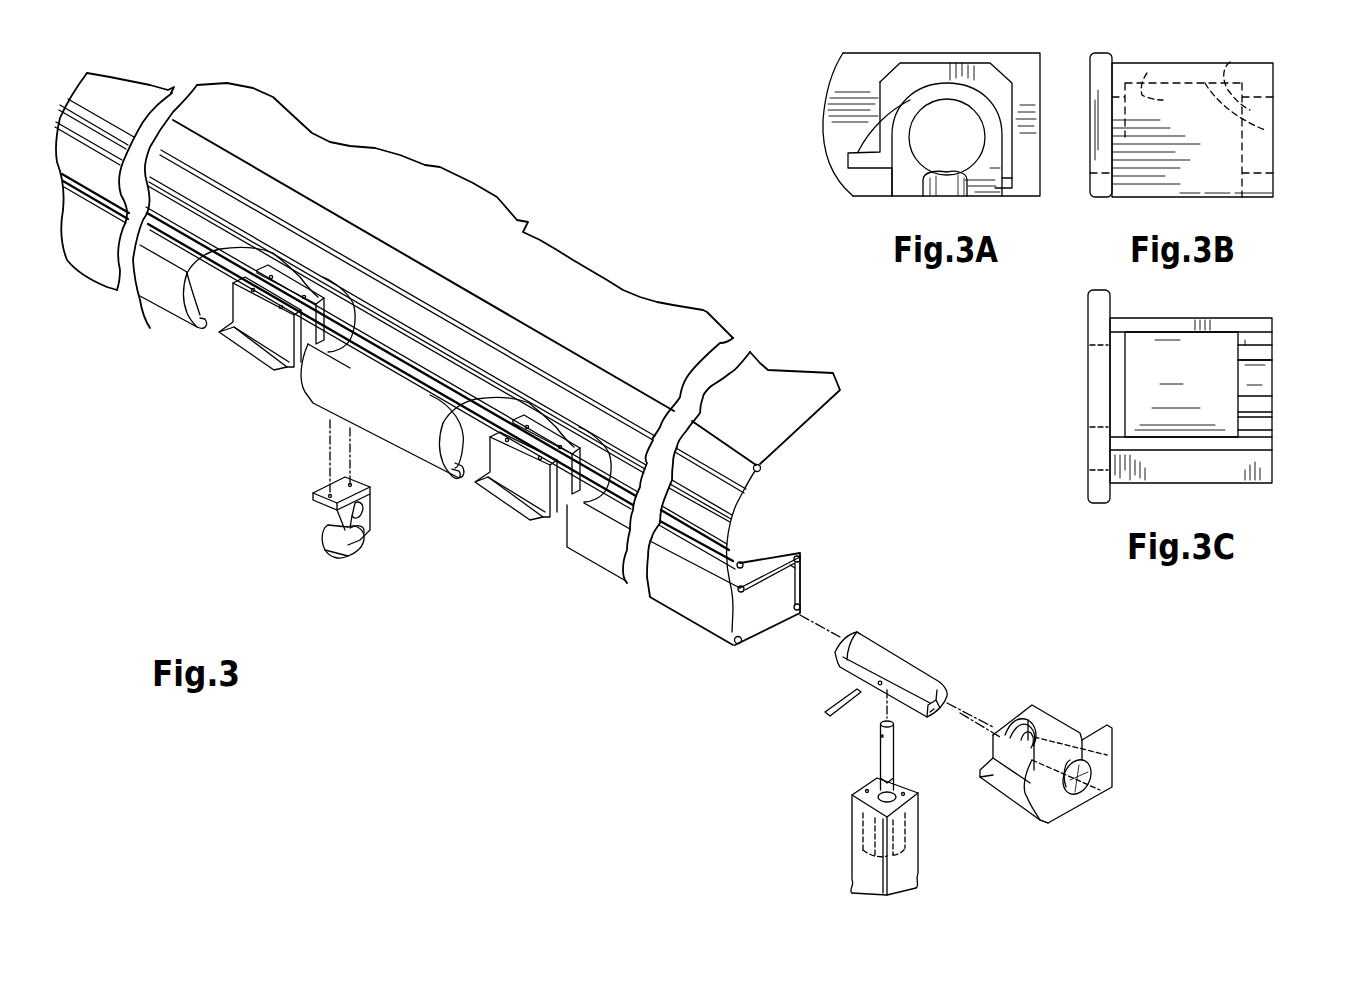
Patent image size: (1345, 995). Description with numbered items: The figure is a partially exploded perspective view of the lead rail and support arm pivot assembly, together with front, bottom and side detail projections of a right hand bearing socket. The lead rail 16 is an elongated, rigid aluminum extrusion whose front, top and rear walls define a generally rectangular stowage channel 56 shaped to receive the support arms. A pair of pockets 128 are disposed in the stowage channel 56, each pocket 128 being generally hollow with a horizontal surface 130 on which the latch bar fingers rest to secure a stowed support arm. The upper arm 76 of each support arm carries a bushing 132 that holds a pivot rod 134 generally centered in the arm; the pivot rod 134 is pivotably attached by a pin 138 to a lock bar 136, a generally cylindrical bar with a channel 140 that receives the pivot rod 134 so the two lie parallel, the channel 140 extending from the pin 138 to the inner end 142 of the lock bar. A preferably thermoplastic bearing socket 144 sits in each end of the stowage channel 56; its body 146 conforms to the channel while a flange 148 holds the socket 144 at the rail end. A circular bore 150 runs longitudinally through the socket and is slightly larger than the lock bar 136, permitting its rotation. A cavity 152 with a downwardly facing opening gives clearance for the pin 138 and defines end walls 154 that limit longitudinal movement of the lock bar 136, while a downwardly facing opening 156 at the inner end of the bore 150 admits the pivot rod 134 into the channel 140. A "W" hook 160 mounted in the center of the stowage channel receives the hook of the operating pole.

In FIG. 3, the lead rail 16 is at (405, 458).
In FIG. 3, the stowage channel 56 is at (765, 632).
In FIG. 3, the upper arm 76 is at (915, 831).
In FIG. 3, the pocket 128 is at (255, 335).
In FIG. 3, the horizontal surface 130 is at (266, 368).
In FIG. 3, the bushing 132 is at (857, 790).
In FIG. 3, the pivot rod 134 is at (872, 758).
In FIG. 3, the lock bar 136 is at (886, 645).
In FIG. 3, the pin 138 is at (840, 693).
In FIG. 3, the channel 140 is at (936, 722).
In FIG. 3, the inner end 142 is at (845, 640).
In FIG. 3, the bearing socket 144 is at (1095, 688).
In FIG. 3, the body 146 is at (1045, 710).
In FIG. 3, the flange 148 is at (1115, 755).
In FIG. 3, the circular bore 150 is at (1090, 792).
In FIG. 3A, the circular bore 150 is at (978, 157).
In FIG. 3B, the circular bore 150 is at (1125, 97).
In FIG. 3A, the cavity 152 is at (858, 152).
In FIG. 3B, the cavity 152 is at (1270, 143).
In FIG. 3B, the end walls 154 is at (1130, 75).
In FIG. 3C, the end walls 154 is at (1207, 333).
In FIG. 3A, the downwardly facing opening 156 is at (925, 190).
In FIG. 3C, the downwardly facing opening 156 is at (1263, 387).
In FIG. 3, the "W" hook 160 is at (342, 548).